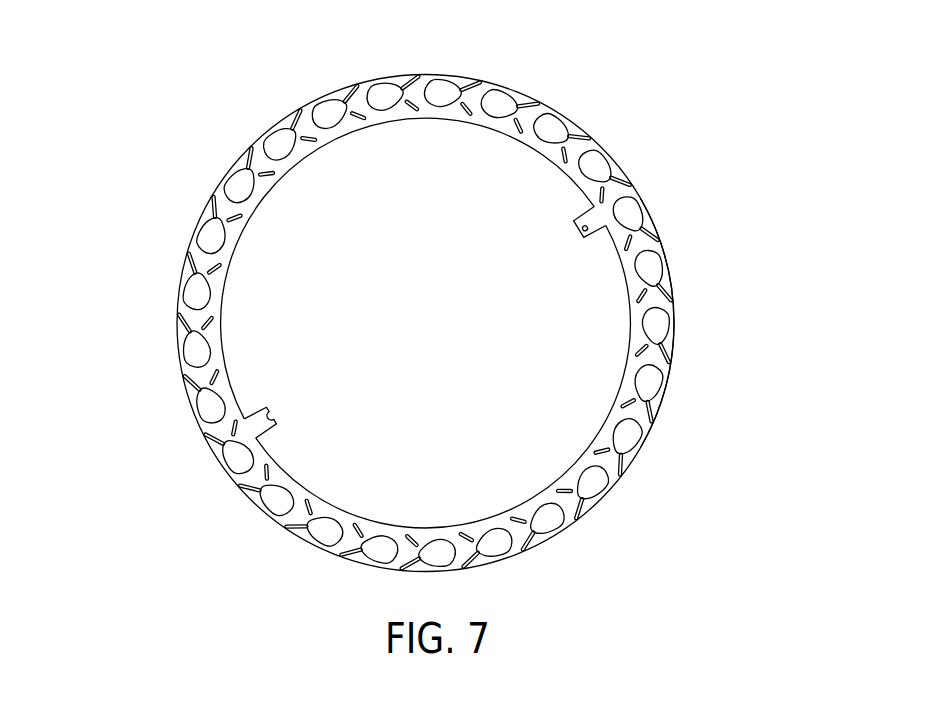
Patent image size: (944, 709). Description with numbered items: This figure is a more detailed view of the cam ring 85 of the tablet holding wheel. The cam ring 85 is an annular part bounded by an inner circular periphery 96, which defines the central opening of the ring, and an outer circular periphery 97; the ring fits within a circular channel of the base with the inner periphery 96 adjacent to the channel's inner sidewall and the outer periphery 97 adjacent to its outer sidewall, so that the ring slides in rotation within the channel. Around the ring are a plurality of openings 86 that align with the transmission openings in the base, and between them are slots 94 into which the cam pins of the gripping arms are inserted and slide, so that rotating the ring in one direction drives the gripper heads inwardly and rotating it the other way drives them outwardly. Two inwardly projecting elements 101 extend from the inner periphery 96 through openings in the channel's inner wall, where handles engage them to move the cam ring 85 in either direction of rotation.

The cam ring 85 is at (629, 155).
The openings 86 is at (461, 77).
The slots 94 is at (237, 151).
The inner circular periphery 96 is at (533, 164).
The outer circular periphery 97 is at (687, 285).
The inwardly projecting elements 101 is at (578, 250).